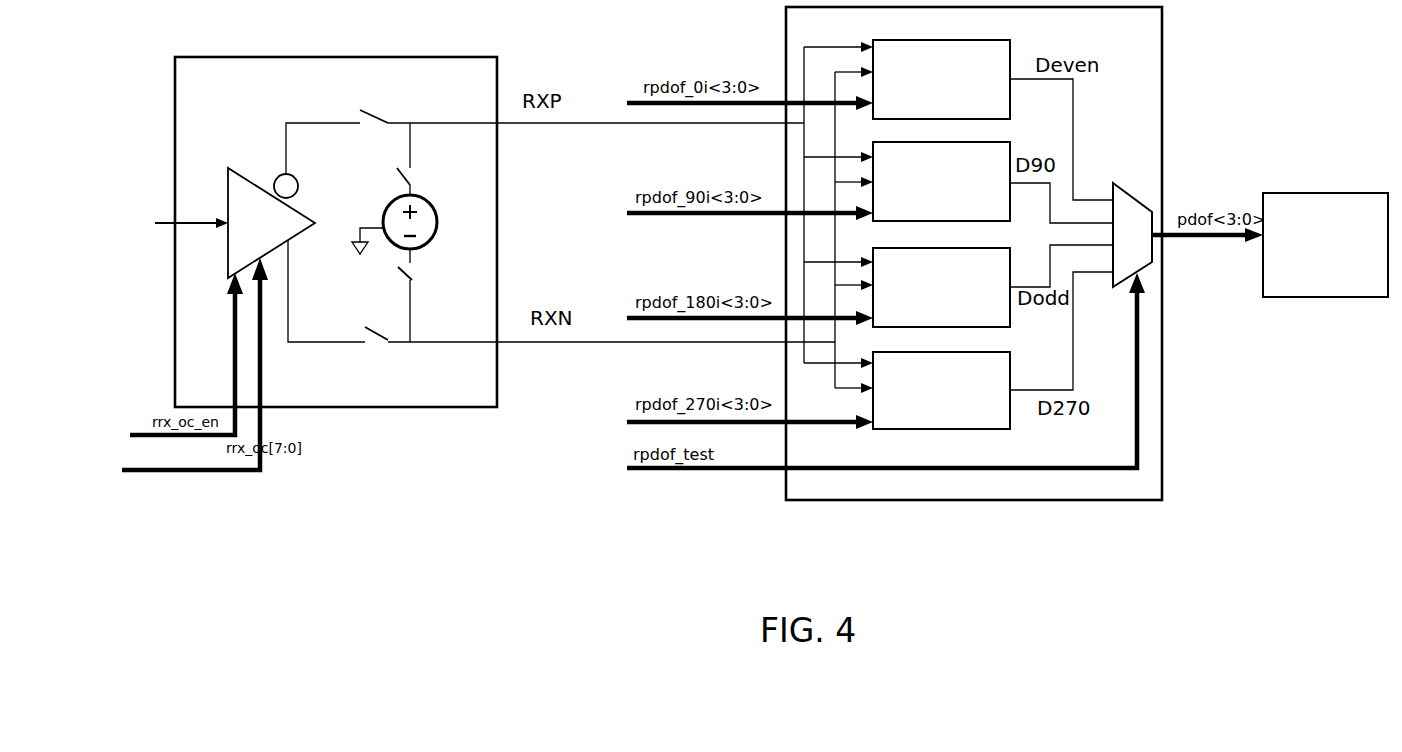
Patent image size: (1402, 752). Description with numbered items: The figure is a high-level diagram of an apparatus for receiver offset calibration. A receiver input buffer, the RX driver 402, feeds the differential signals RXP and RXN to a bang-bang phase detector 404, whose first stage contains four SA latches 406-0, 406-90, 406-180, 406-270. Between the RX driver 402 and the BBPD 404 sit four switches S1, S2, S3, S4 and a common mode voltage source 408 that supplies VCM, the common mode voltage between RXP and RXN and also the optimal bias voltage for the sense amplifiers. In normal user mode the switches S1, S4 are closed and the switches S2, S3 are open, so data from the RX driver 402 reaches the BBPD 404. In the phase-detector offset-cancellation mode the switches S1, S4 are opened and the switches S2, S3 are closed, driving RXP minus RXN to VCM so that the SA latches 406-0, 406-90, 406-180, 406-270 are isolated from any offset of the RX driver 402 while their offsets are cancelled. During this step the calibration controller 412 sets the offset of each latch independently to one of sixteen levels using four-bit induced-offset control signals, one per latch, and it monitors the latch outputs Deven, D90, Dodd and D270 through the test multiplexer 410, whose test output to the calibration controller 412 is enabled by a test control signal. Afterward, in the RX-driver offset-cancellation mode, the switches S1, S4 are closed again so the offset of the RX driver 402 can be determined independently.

The receiver input buffer (RX driver) 402 is at (256, 195).
The bang-bang phase detector 404 is at (974, 253).
The SA latch 406-0 is at (941, 79).
The SA latch 406-90 is at (941, 181).
The SA latch 406-180 is at (941, 287).
The SA latch 406-270 is at (941, 390).
The common mode voltage (VCM) source 408 is at (435, 221).
The test multiplexer 410 is at (1132, 235).
The calibration controller 412 is at (1325, 245).
The switch S1 is at (377, 105).
The switch S2 is at (425, 171).
The switch S3 is at (426, 280).
The switch S4 is at (382, 352).